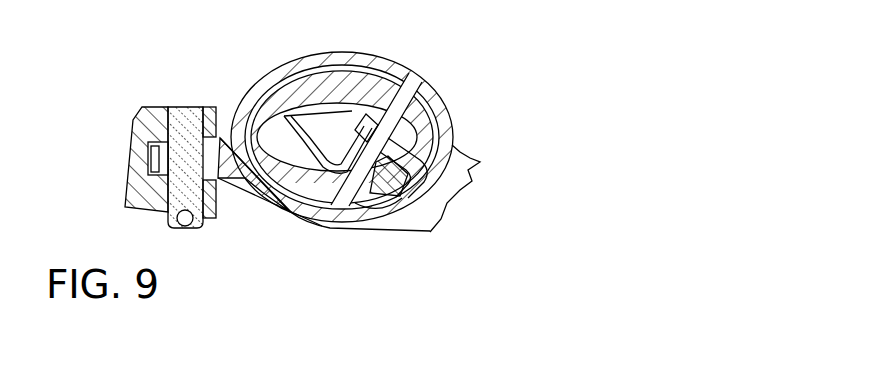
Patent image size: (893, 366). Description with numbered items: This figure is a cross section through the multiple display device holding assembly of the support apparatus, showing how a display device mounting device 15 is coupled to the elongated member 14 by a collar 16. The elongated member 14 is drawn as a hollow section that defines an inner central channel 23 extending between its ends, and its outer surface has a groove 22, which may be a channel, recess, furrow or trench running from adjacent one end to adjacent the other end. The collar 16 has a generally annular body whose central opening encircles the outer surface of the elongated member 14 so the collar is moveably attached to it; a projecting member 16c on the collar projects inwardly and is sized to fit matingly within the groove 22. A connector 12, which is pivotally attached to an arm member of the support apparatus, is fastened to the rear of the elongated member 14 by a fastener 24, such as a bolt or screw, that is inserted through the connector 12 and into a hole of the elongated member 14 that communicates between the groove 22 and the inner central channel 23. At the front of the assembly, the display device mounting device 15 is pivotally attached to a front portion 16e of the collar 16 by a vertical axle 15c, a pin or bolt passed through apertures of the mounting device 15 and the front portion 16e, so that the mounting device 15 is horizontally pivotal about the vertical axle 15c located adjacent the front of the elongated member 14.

The connector 12 is at (473, 178).
The elongated member 14 is at (375, 83).
The display device mounting device 15 is at (133, 172).
The vertical axle 15c is at (190, 108).
The collar 16 is at (260, 80).
The projecting member 16c is at (433, 170).
The front portion of collar 16e is at (228, 170).
The groove 22 is at (417, 143).
The inner central channel 23 is at (333, 127).
The fastener 24 is at (382, 122).